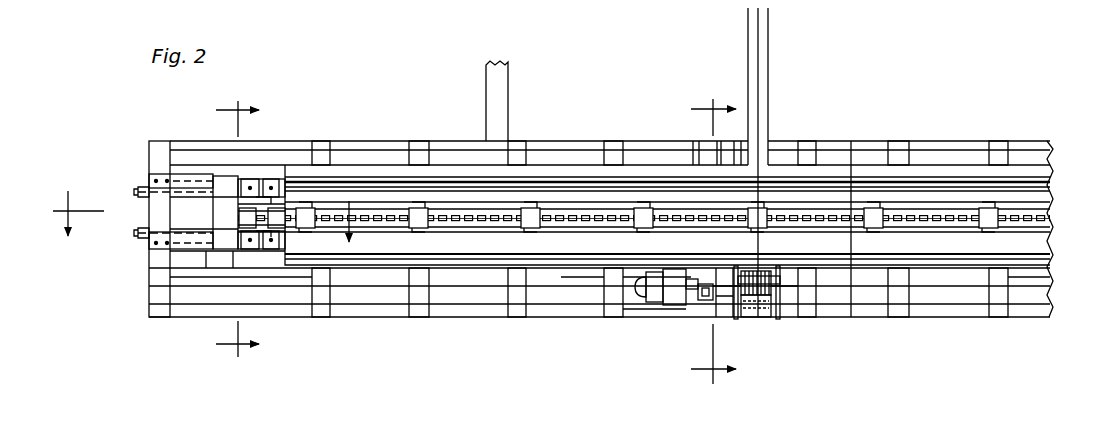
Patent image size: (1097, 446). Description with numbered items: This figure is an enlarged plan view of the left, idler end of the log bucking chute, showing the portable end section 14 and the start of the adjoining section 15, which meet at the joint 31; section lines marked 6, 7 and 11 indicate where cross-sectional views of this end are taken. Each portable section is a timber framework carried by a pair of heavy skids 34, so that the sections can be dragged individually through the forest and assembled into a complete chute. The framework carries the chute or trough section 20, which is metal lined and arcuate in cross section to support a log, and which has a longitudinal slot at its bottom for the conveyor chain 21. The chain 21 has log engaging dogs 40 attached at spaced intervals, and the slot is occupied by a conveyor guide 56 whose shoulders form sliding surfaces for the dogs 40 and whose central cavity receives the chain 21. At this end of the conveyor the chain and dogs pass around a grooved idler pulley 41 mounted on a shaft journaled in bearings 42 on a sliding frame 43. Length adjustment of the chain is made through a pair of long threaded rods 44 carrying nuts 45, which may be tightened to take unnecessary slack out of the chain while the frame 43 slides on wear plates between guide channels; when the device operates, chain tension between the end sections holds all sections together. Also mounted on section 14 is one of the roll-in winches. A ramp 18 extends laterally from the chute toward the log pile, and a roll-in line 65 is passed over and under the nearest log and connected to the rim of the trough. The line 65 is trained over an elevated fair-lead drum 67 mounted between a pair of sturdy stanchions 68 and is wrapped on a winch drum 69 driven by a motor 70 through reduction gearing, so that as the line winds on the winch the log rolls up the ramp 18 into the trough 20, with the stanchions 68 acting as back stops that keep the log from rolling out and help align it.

The section line 6- 6 is at (237, 227).
The section line 7- 7 is at (204, 222).
The section line 11- 11 is at (713, 242).
The end section 14 is at (545, 140).
The section 15 is at (942, 141).
The ramp 18 is at (498, 63).
The trough section 20 is at (335, 182).
The conveyor chain 21 is at (341, 222).
The joint 31 is at (850, 162).
The skids 34 is at (194, 143).
The log engaging dogs 40 is at (418, 231).
The grooved idler pulley 41 is at (247, 188).
The bearings 42 is at (270, 182).
The sliding frame 43 is at (225, 238).
The threaded rods 44 is at (135, 232).
The nuts 45 is at (138, 238).
The conveyor guide 56 is at (1044, 236).
The roll-in line 65 is at (757, 86).
The fair-lead drum 67 is at (760, 318).
The stanchions 68 is at (728, 320).
The winch drum 69 is at (766, 280).
The motor 70 is at (652, 296).